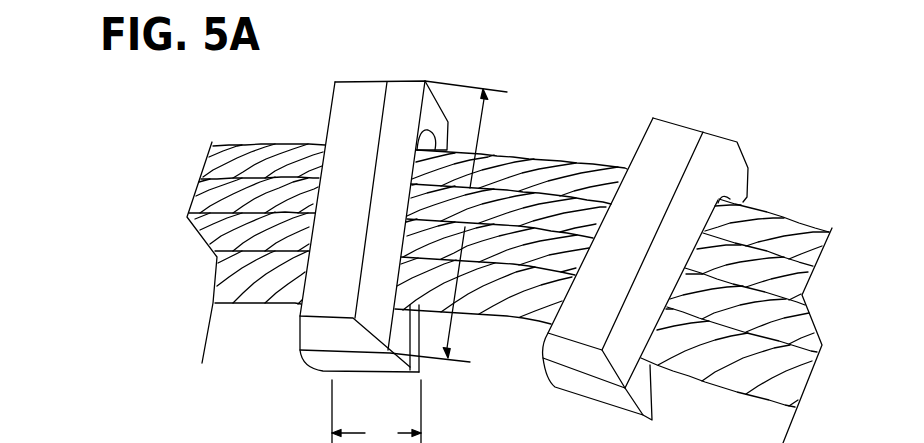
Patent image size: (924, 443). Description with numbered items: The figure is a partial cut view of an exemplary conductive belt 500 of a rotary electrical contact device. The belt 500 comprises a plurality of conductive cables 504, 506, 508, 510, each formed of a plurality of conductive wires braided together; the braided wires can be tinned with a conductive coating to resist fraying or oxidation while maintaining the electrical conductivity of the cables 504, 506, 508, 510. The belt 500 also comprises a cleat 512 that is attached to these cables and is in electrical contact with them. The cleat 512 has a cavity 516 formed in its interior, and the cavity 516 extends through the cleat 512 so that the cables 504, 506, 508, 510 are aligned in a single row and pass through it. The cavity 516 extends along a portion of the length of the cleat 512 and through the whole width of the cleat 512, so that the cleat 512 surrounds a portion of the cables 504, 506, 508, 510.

The belt 500 is at (812, 48).
The conductive cable 504 is at (807, 242).
The conductive cable 506 is at (800, 295).
The conductive cable 508 is at (795, 340).
The conductive cable 510 is at (795, 383).
The cleat 512 is at (387, 80).
The cavity 516 is at (420, 128).